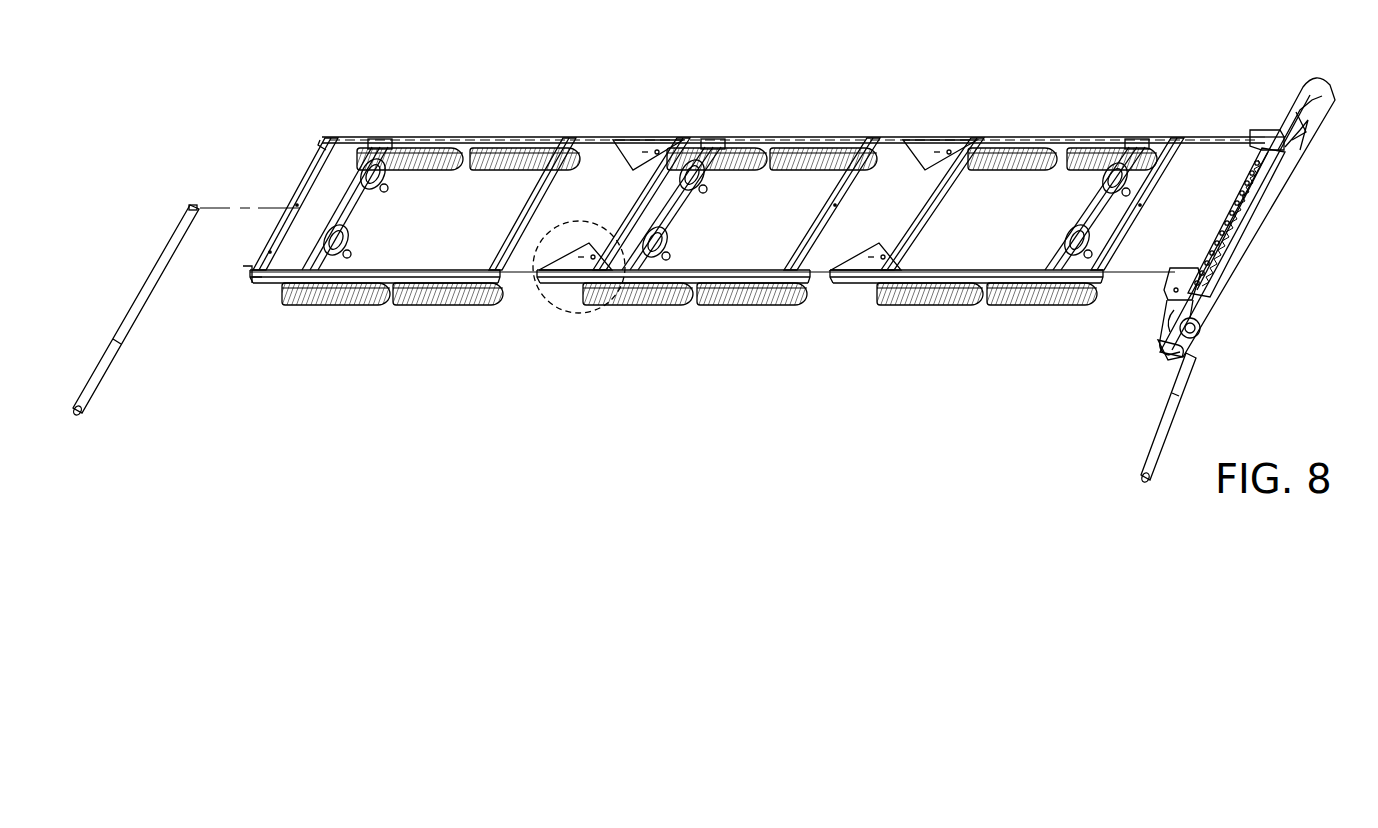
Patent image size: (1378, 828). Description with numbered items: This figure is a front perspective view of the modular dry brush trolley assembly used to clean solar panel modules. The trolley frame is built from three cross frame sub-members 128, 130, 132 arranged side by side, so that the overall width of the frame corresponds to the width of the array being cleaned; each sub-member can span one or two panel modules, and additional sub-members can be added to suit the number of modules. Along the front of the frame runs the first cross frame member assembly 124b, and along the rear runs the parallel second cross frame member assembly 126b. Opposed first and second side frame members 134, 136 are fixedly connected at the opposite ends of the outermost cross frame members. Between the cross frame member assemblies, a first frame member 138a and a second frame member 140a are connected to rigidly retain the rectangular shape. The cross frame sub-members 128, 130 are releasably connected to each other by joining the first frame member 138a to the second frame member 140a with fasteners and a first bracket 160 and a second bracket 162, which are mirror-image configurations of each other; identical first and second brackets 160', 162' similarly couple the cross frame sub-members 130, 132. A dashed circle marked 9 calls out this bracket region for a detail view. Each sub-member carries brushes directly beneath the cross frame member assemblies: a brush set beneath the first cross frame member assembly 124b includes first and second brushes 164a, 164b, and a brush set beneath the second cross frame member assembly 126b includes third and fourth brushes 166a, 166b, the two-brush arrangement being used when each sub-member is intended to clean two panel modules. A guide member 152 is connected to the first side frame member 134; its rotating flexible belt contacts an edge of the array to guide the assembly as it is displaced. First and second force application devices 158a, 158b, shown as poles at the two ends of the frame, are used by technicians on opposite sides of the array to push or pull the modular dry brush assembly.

The detail area of FIG. 9 is at (580, 313).
The first cross frame member assembly 124b is at (737, 140).
The second cross frame member assembly 126b is at (708, 300).
The cross frame sub-member 128 is at (1074, 116).
The cross frame sub-member 130 is at (780, 116).
The cross frame sub-member 132 is at (476, 116).
The first side frame member 134 is at (1130, 228).
The second side frame member 136 is at (308, 185).
The first frame member 138a is at (902, 232).
The second frame member 140a is at (840, 212).
The guide member 152 is at (1290, 252).
The first force application device 158a is at (1190, 388).
The second force application device 158b is at (130, 328).
The first bracket 160 is at (931, 120).
The first bracket 160' is at (637, 120).
The second bracket 162 is at (861, 308).
The second bracket 162' is at (563, 308).
The first brush 164a is at (795, 170).
The second brush 164b is at (725, 170).
The third brush 166a is at (740, 298).
The fourth brush 166b is at (612, 298).